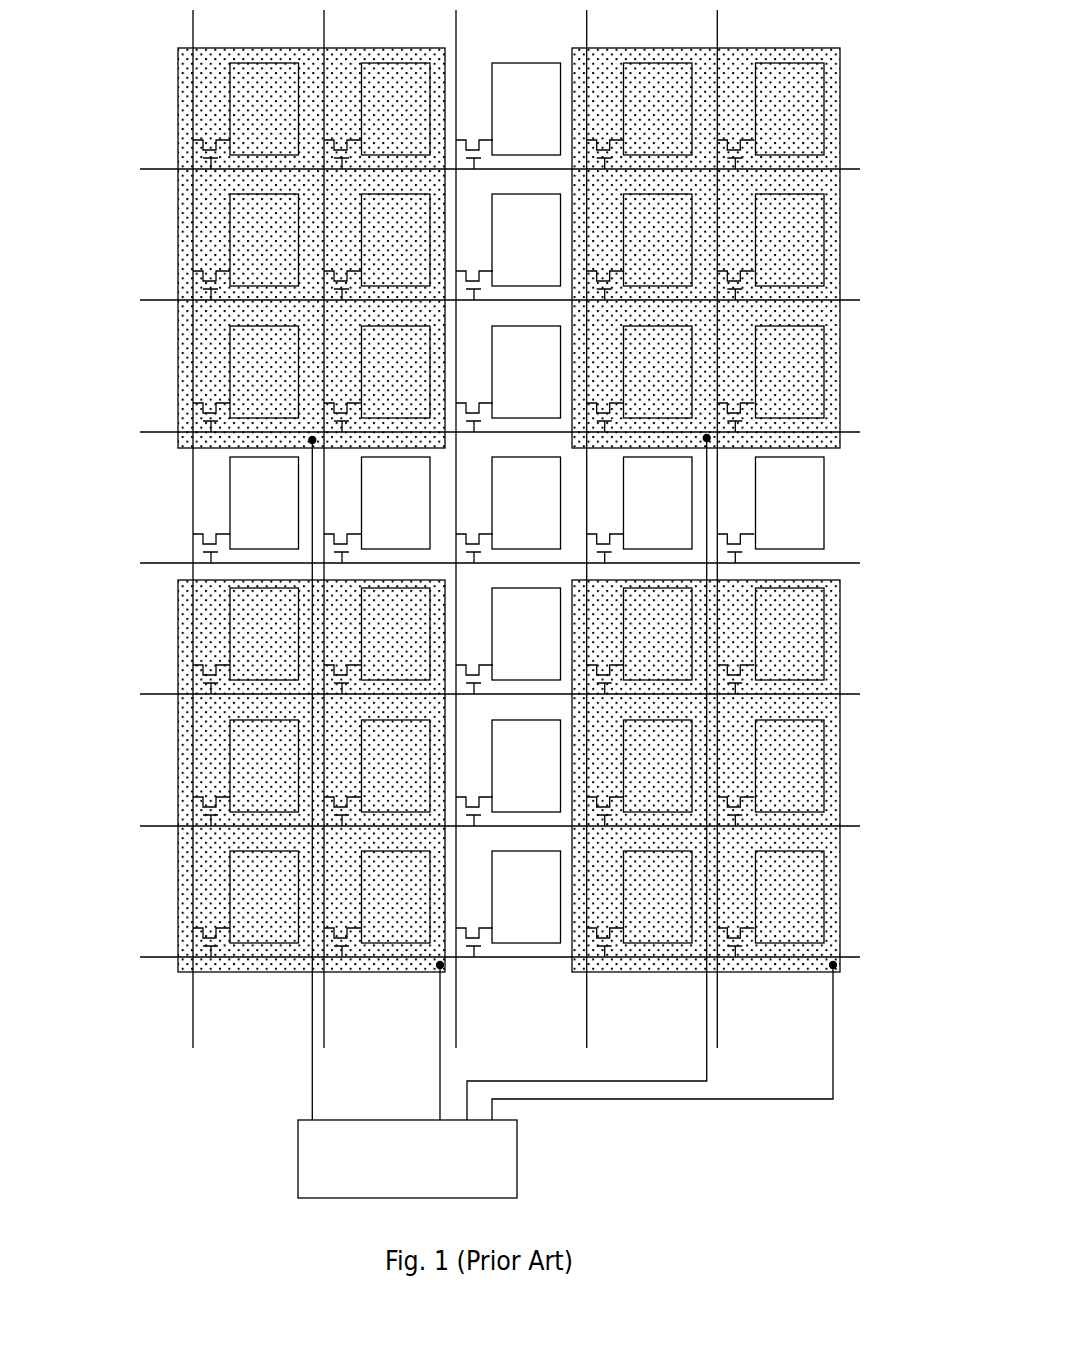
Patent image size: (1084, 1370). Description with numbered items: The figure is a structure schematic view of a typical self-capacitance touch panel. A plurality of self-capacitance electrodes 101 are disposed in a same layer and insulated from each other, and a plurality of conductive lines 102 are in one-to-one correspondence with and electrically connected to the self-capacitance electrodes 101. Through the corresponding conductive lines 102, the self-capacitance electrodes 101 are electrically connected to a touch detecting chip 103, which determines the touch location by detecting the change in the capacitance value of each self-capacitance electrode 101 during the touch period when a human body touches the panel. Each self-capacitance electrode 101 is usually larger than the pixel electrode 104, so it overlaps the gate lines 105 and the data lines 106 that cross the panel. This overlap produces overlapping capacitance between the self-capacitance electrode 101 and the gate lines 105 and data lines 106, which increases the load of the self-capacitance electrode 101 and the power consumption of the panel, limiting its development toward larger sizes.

The self-capacitance electrode 101 is at (213, 63).
The conductive line 102 is at (312, 983).
The touch detecting chip 103 is at (350, 1175).
The pixel electrode 104 is at (531, 87).
The gate line 105 is at (158, 955).
The data line 106 is at (193, 1005).